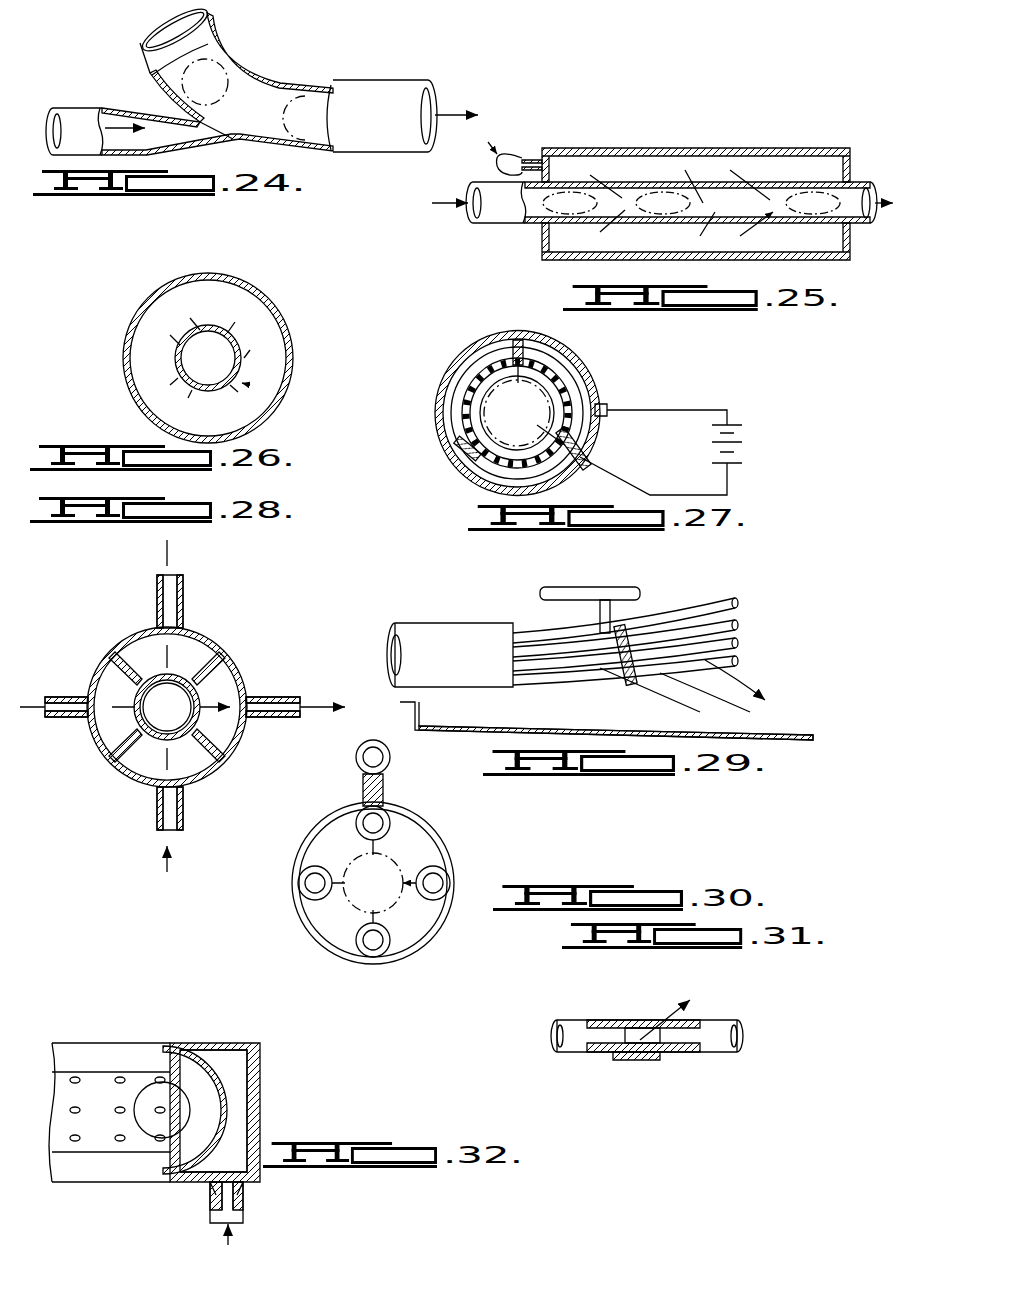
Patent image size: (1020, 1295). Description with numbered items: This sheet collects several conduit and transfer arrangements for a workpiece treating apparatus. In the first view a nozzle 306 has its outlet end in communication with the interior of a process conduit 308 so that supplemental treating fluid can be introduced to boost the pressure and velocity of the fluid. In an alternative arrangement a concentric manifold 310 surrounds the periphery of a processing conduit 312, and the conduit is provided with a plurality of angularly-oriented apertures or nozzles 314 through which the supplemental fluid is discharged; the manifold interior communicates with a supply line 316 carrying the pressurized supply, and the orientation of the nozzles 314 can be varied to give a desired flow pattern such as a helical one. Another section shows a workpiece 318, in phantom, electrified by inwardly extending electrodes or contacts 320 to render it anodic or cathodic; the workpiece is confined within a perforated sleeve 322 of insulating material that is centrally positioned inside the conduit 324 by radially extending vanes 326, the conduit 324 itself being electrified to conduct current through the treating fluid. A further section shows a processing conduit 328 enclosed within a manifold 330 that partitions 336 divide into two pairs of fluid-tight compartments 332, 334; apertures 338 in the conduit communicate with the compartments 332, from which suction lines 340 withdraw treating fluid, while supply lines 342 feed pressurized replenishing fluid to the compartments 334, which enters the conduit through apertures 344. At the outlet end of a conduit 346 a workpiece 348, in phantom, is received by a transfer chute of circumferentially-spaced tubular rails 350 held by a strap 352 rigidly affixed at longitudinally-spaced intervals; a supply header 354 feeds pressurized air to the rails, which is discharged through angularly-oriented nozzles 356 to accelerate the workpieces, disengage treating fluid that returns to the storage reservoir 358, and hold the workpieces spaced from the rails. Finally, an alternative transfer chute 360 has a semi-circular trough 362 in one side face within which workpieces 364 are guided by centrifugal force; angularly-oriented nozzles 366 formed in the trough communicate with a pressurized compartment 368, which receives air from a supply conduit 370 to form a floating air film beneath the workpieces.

In FIG. 24, the nozzle 306 is at (160, 120).
In FIG. 24, the process conduit 308 is at (365, 95).
In FIG. 25, the concentric manifold 310 is at (742, 175).
In FIG. 26, the concentric manifold 310 is at (292, 333).
In FIG. 25, the processing conduit 312 is at (489, 225).
In FIG. 26, the processing conduit 312 is at (242, 368).
In FIG. 25, the angularly-oriented apertures or nozzles 314 is at (592, 178).
In FIG. 26, the angularly-oriented apertures or nozzles 314 is at (238, 340).
In FIG. 25, the supply line 316 is at (522, 158).
In FIG. 27, the workpiece 318 is at (604, 382).
In FIG. 27, the electrodes or contacts 320 is at (560, 380).
In FIG. 27, the perforated sleeve 322 is at (460, 388).
In FIG. 27, the conduit 324 is at (505, 345).
In FIG. 27, the radially extending vanes 326 is at (540, 352).
In FIG. 28, the processing conduit 328 is at (215, 668).
In FIG. 28, the manifold 330 is at (188, 672).
In FIG. 28, the compartments 332 is at (230, 695).
In FIG. 28, the compartments 334 is at (148, 640).
In FIG. 28, the partitions 336 is at (135, 665).
In FIG. 28, the apertures 338 is at (130, 725).
In FIG. 28, the suction lines 340 is at (55, 697).
In FIG. 28, the supply lines 342 is at (182, 585).
In FIG. 28, the apertures 344 is at (178, 665).
In FIG. 29, the conduit 346 is at (455, 632).
In FIG. 29, the workpiece 348 is at (700, 590).
In FIG. 30, the workpiece 348 is at (440, 835).
In FIG. 29, the tubular rails 350 is at (740, 612).
In FIG. 30, the tubular rails 350 is at (390, 818).
In FIG. 31, the tubular rails 350 is at (710, 1022).
In FIG. 29, the strap 352 is at (645, 625).
In FIG. 30, the strap 352 is at (450, 858).
In FIG. 29, the supply header 354 is at (560, 590).
In FIG. 30, the supply header 354 is at (390, 762).
In FIG. 30, the angularly-oriented nozzles 356 is at (365, 830).
In FIG. 31, the angularly-oriented nozzles 356 is at (645, 1022).
In FIG. 29, the storage reservoir 358 is at (492, 728).
In FIG. 32, the transfer chute 360 is at (252, 1070).
In FIG. 32, the semi-circular trough 362 is at (188, 1105).
In FIG. 32, the workpieces 364 is at (130, 1075).
In FIG. 32, the angularly-oriented nozzles 366 is at (200, 1075).
In FIG. 32, the pressurized compartment 368 is at (235, 1090).
In FIG. 32, the supply conduit 370 is at (245, 1202).